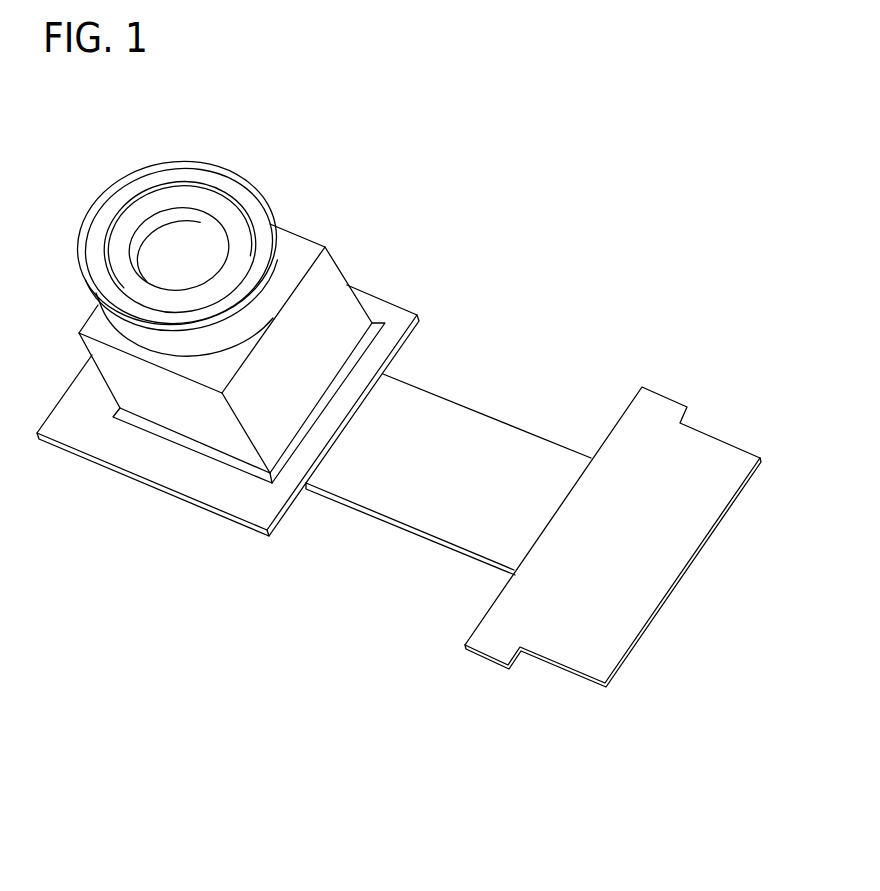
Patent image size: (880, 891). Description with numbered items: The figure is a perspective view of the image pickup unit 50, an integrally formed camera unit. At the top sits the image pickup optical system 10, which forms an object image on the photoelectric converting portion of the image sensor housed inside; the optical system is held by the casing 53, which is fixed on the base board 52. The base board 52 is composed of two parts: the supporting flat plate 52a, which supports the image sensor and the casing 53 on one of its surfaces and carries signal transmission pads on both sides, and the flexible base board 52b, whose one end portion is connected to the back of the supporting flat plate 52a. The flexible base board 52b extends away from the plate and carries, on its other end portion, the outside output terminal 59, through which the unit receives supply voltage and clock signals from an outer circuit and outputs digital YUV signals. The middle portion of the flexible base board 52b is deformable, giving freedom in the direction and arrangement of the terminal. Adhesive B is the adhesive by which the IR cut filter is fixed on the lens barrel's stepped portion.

The image pickup optical system 10 is at (180, 237).
The image pickup unit 50 is at (478, 216).
The base board 52 is at (381, 589).
The supporting flat plate 52a is at (292, 509).
The flexible base board 52b is at (348, 507).
The casing 53 is at (327, 292).
The outside output terminal 59 is at (563, 647).
The adhesive B is at (380, 332).